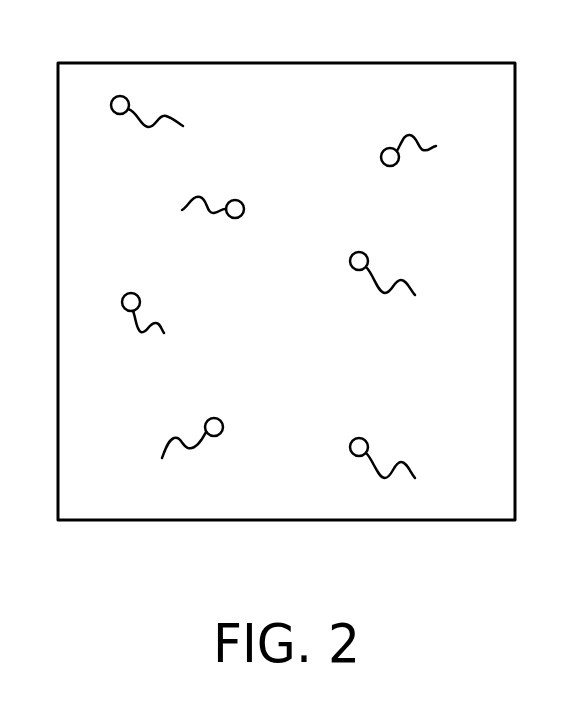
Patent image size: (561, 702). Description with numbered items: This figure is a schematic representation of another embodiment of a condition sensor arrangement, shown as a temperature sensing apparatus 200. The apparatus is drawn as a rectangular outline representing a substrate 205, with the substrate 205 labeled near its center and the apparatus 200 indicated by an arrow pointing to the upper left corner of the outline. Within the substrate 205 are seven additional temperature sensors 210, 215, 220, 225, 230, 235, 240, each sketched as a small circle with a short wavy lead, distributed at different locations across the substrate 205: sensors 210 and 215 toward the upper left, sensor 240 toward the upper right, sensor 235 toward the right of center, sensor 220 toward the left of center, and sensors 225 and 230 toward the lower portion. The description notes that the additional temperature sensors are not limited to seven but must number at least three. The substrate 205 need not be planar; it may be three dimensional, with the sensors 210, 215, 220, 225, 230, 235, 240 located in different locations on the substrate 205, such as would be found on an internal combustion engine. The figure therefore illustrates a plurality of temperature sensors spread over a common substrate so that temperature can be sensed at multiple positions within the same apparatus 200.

The temperature sensing apparatus 200 is at (52, 52).
The substrate 205 is at (310, 305).
The additional temperature sensor 210 is at (179, 122).
The additional temperature sensor 215 is at (192, 205).
The additional temperature sensor 220 is at (152, 331).
The additional temperature sensor 225 is at (166, 456).
The additional temperature sensor 230 is at (407, 466).
The additional temperature sensor 235 is at (407, 280).
The additional temperature sensor 240 is at (432, 148).